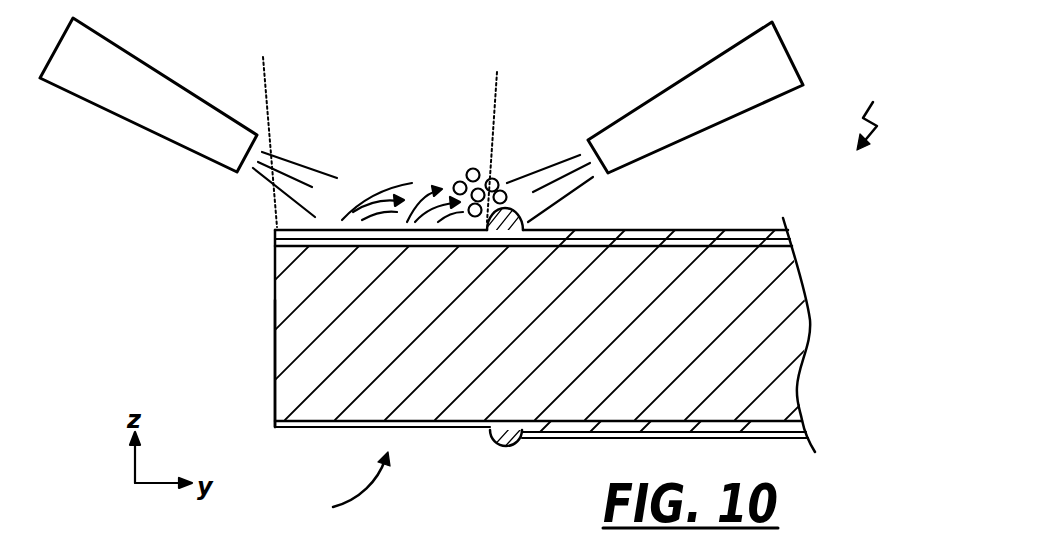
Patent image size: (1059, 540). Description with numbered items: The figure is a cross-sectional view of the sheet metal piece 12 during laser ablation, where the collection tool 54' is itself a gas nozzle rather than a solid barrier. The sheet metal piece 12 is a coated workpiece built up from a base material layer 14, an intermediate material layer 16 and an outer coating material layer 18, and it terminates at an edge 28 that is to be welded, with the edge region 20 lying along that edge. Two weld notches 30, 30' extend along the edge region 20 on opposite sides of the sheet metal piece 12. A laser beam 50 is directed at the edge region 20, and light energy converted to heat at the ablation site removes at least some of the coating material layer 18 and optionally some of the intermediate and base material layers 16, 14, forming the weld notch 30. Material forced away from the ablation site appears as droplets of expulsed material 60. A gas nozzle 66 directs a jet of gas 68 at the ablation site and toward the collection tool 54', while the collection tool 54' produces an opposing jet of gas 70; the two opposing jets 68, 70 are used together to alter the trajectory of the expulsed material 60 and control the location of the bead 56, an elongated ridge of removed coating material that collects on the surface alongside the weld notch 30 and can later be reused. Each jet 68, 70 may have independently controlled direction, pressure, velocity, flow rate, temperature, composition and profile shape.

The sheet metal piece 12 is at (873, 109).
The base material layer 14 is at (780, 320).
The intermediate material layer 16 is at (793, 243).
The coating material layer 18 is at (745, 233).
The edge region 20 is at (341, 491).
The edge 28 is at (275, 385).
The weld notch 30 is at (400, 183).
The weld notch 30' is at (479, 460).
The laser beam 50 is at (497, 90).
The collection tool 54' is at (695, 97).
The bead 56 is at (512, 217).
The expulsed material 60 is at (468, 173).
The gas nozzle 66 is at (235, 115).
The jet of gas 68 is at (285, 157).
The jet of gas 70 is at (568, 188).